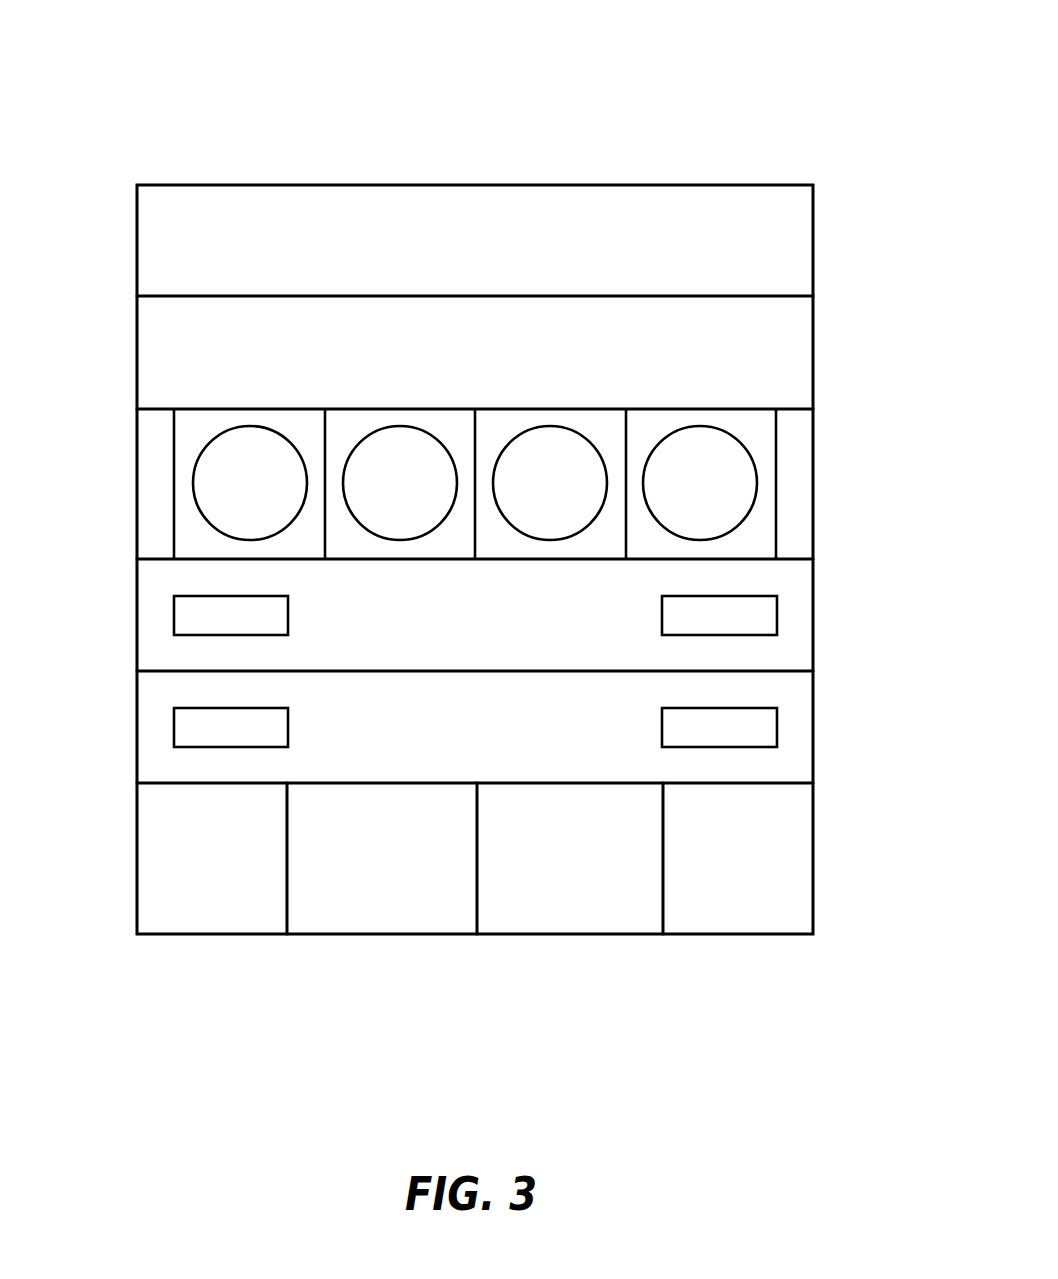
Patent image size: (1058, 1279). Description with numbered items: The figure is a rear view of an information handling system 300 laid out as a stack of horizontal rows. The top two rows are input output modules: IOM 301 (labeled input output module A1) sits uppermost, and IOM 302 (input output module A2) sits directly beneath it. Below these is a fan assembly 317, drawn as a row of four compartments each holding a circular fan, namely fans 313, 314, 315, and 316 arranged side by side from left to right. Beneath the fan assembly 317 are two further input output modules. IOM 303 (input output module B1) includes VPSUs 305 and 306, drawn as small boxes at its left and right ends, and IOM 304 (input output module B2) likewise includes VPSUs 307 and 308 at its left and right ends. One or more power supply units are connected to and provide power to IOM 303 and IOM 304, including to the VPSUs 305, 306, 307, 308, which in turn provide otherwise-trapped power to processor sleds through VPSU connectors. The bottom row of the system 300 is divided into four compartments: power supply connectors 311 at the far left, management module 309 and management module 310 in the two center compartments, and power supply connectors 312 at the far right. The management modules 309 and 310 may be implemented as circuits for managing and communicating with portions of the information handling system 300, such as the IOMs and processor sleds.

The information handling system 300 is at (736, 92).
The IOM 301 is at (813, 240).
The IOM 302 is at (813, 333).
The IOM 303 is at (813, 632).
The IOM 304 is at (813, 752).
The VPSU 305 is at (174, 618).
The VPSU 306 is at (777, 615).
The VPSU 307 is at (174, 729).
The VPSU 308 is at (777, 727).
The management module 309 is at (383, 936).
The management module 310 is at (567, 936).
The power supply connectors 311 is at (190, 936).
The power supply connectors 312 is at (752, 936).
The fan 313 is at (200, 454).
The fan 314 is at (360, 446).
The fan 315 is at (590, 438).
The fan 316 is at (755, 472).
The fan assembly 317 is at (813, 487).